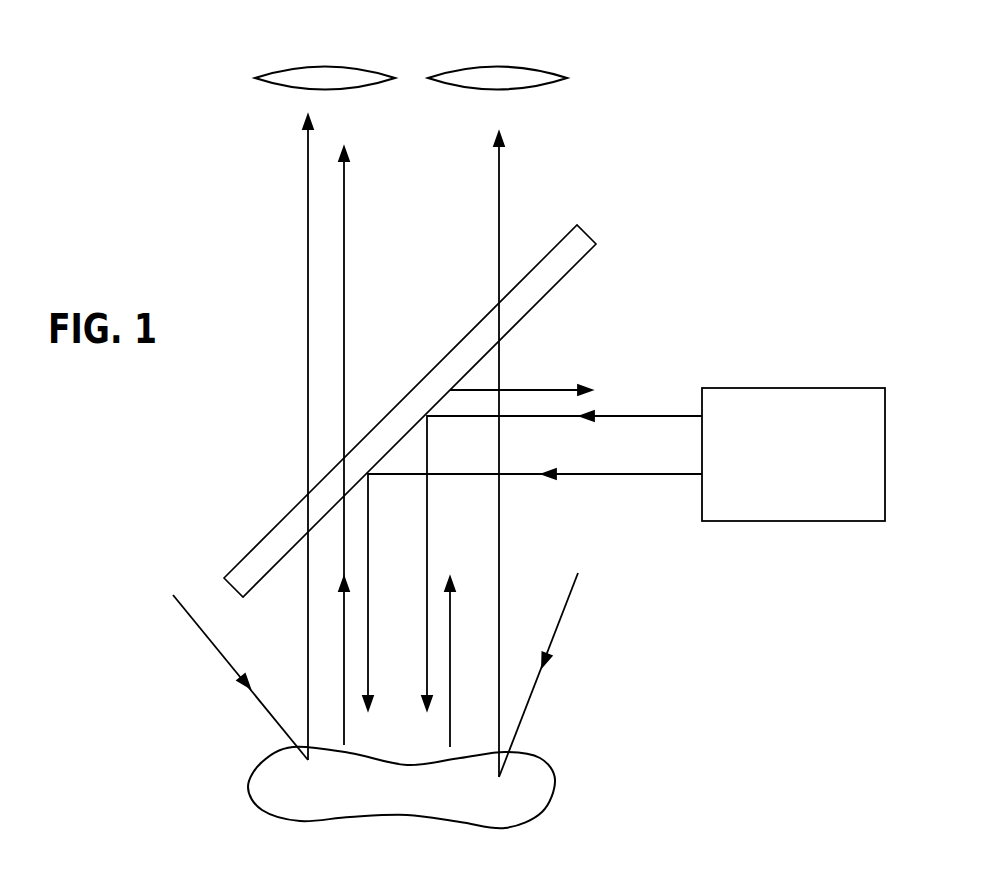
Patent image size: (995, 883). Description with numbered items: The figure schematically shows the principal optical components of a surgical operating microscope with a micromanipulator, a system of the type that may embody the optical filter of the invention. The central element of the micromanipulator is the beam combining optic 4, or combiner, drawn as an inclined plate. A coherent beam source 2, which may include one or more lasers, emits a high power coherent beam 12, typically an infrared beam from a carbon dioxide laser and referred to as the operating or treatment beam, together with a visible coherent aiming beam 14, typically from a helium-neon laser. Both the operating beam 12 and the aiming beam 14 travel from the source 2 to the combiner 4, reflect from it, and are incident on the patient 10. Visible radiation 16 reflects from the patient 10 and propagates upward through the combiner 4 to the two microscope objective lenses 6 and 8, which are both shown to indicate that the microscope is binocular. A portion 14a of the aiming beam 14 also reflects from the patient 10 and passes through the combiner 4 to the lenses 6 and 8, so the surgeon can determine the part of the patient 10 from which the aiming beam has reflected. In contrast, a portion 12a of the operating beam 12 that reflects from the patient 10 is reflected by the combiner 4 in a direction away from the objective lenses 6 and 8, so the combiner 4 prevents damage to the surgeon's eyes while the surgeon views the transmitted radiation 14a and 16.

The coherent beam source 2 is at (723, 512).
The beam combining optic 4 is at (565, 262).
The microscope objective lens 6 is at (513, 75).
The microscope objective lens 8 is at (337, 70).
The patient 10 is at (532, 805).
The high power coherent beam 12 is at (603, 418).
The portion of operating beam 12a is at (532, 387).
The aiming beam 14 is at (603, 476).
The portion of aiming beam 14a is at (344, 260).
The visible radiation 16 is at (307, 193).